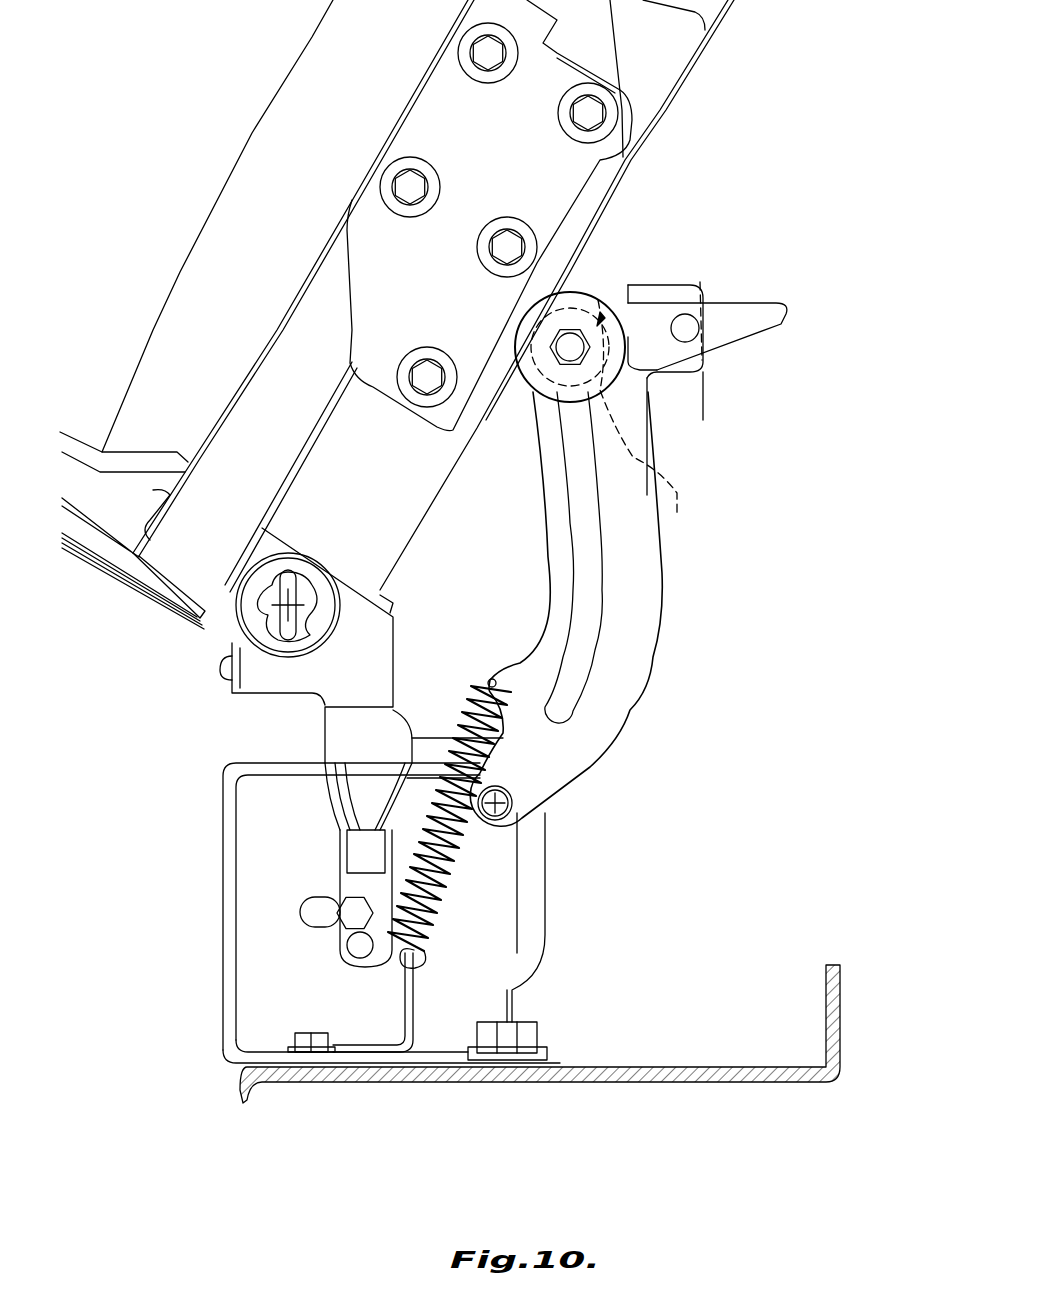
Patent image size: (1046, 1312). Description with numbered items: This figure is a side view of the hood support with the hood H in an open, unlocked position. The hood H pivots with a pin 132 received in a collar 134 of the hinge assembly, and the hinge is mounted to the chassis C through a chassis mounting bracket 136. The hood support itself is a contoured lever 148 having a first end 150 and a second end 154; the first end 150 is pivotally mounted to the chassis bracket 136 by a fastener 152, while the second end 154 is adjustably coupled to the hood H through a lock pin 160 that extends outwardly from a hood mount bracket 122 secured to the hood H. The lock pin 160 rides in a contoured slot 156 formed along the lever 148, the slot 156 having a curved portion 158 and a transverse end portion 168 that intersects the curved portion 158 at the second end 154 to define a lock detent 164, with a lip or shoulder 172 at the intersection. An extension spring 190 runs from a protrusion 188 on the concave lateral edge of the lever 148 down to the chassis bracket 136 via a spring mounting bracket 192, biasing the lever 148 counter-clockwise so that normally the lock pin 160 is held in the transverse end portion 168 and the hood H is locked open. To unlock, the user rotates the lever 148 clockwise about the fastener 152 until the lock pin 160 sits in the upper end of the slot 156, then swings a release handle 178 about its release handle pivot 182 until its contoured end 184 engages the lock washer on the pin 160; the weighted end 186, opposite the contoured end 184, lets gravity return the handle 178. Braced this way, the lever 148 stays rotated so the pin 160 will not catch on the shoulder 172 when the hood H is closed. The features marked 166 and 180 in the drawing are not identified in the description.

The hood H is at (653, 52).
The chassis C is at (708, 1083).
The hood mount bracket 122 is at (597, 147).
The pin 132 is at (232, 690).
The collar 134 is at (262, 642).
The chassis mounting bracket 136 is at (223, 935).
The contoured lever 148 is at (640, 590).
The first end 150 is at (525, 780).
The fastener 152 is at (505, 808).
The second end 154 is at (598, 302).
The contoured slot 156 is at (587, 690).
The curved portion 158 is at (580, 647).
The lock pin 160 is at (570, 340).
The lock detent 164 is at (600, 290).
The arm shoulder 166 is at (530, 393).
The transverse end portion 168 is at (620, 300).
The lip 172 is at (652, 421).
The release handle 178 is at (748, 341).
The bracket leg 180 is at (703, 415).
The release handle pivot 182 is at (690, 313).
The contoured end 184 is at (655, 395).
The weighted end 186 is at (783, 318).
The protrusion 188 is at (510, 682).
The extension spring 190 is at (455, 712).
The spring mounting bracket 192 is at (413, 1000).